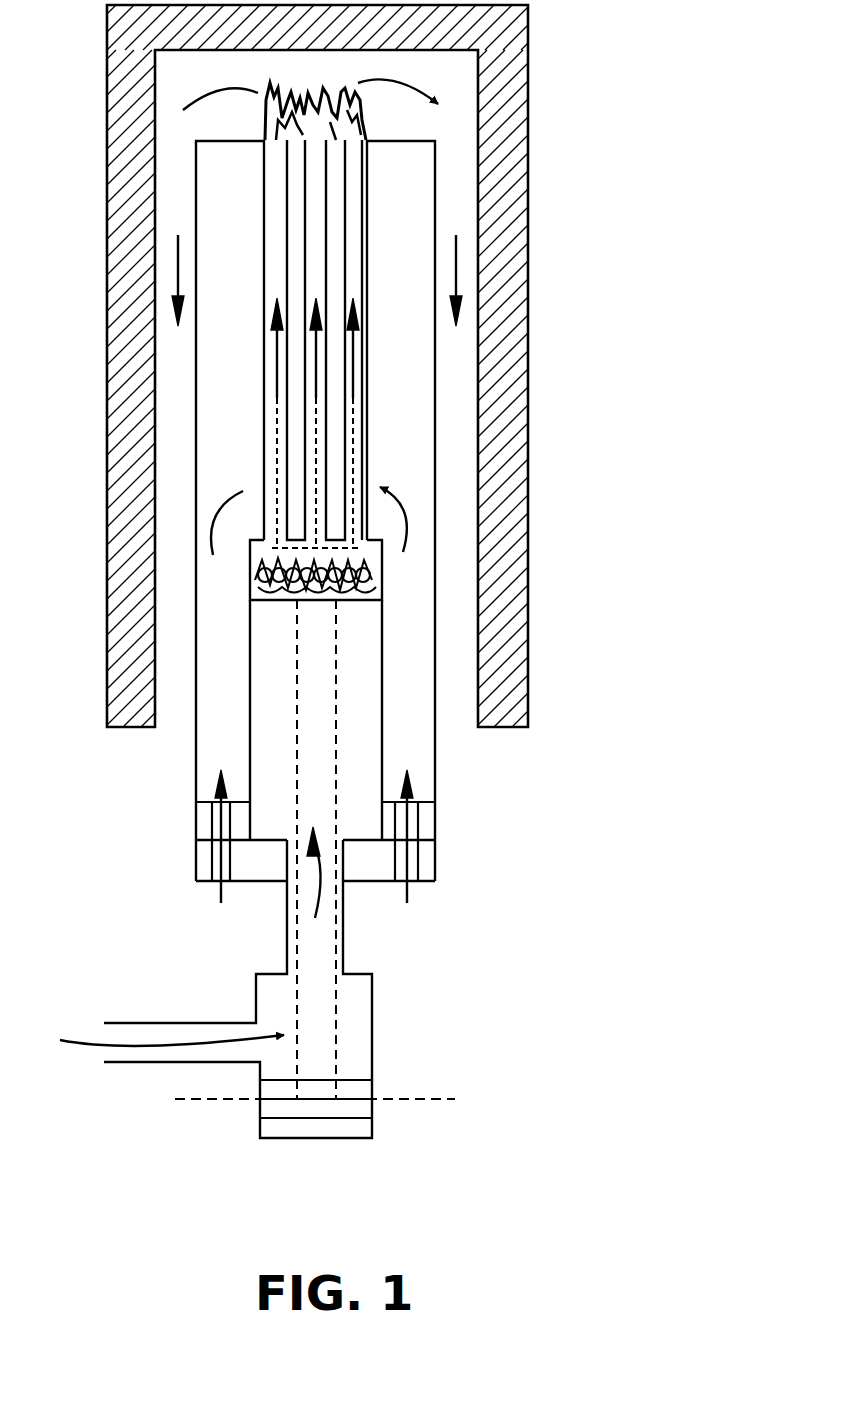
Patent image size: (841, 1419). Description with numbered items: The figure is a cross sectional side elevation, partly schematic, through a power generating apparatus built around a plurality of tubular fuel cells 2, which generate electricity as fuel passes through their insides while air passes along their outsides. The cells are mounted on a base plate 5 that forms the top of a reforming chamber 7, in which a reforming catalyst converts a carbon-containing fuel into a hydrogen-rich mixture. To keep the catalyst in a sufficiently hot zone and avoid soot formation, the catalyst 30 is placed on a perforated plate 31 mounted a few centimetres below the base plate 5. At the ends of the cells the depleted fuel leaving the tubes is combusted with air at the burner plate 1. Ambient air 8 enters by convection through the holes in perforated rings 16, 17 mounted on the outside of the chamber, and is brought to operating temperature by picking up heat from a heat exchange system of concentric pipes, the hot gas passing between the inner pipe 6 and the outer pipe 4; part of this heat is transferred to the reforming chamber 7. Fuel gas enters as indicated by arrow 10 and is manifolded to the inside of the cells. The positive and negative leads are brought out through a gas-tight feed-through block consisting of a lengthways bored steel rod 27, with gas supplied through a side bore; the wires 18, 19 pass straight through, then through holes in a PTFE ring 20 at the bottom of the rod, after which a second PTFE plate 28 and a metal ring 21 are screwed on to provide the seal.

The burner plate 1 is at (362, 112).
The tubular fuel cells 2 is at (368, 277).
The outer pipe 4 is at (478, 335).
The base plate 5 is at (370, 538).
The inner pipe 6 is at (435, 610).
The reforming chamber 7 is at (372, 653).
The ambient air 8 is at (412, 898).
The arrow indicating fuel gas entry 10 is at (128, 1048).
The perforated ring 16 is at (435, 822).
The perforated ring 17 is at (435, 865).
The wire 18 is at (293, 920).
The wire 19 is at (343, 937).
The PTFE ring 20 is at (362, 1085).
The metal ring 21 is at (313, 1125).
The steel rod 27 is at (375, 1015).
The second PTFE plate 28 is at (357, 1107).
The catalyst 30 is at (252, 594).
The perforated plate 31 is at (282, 602).